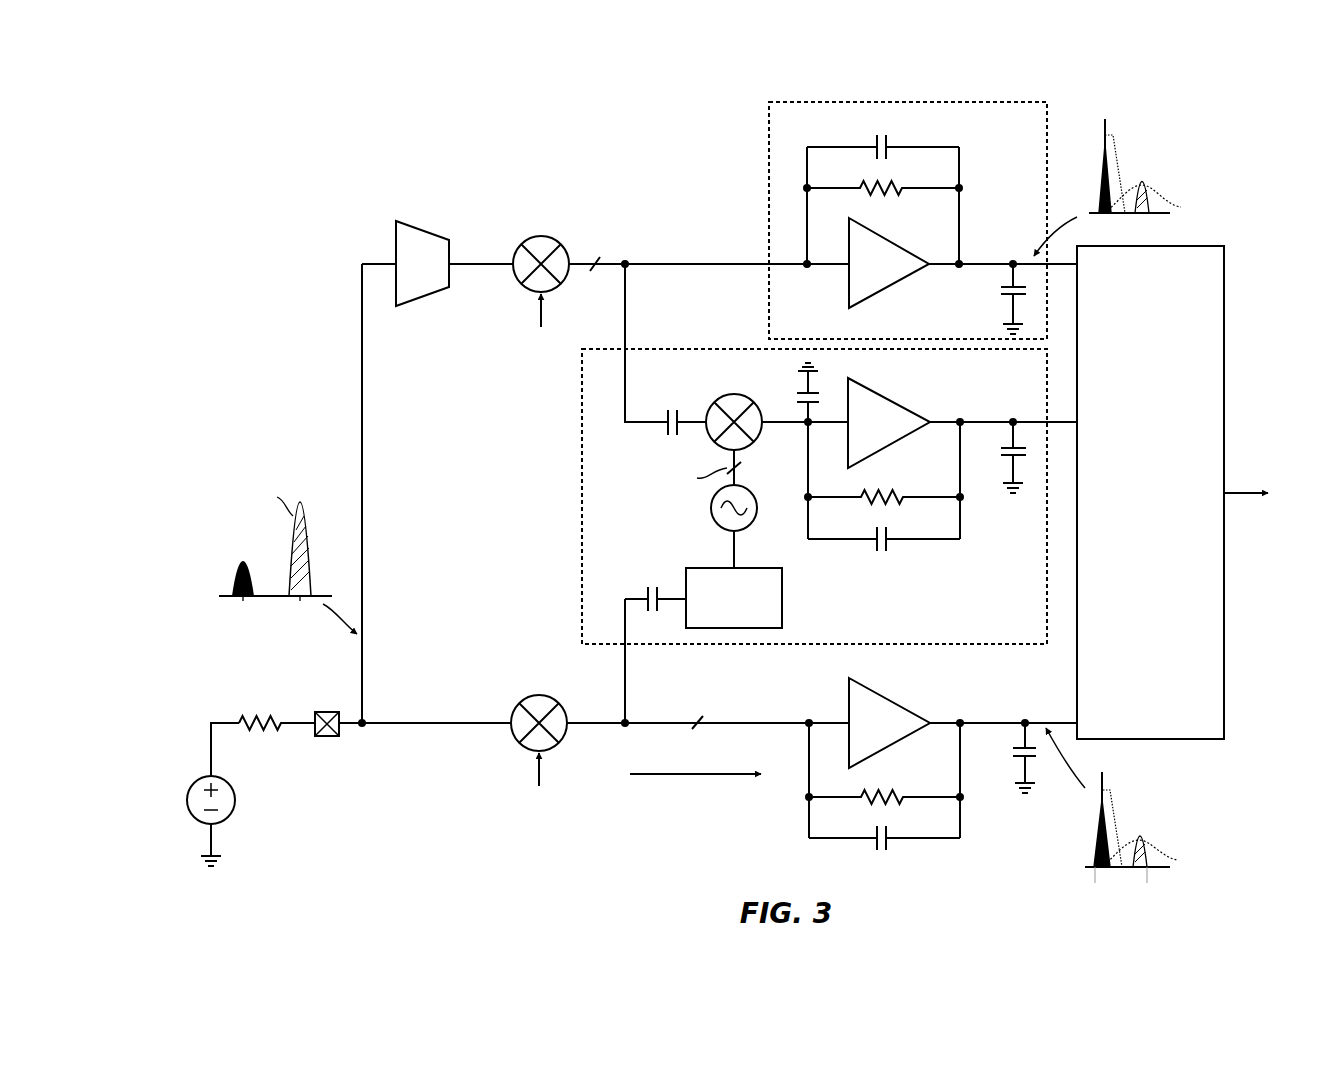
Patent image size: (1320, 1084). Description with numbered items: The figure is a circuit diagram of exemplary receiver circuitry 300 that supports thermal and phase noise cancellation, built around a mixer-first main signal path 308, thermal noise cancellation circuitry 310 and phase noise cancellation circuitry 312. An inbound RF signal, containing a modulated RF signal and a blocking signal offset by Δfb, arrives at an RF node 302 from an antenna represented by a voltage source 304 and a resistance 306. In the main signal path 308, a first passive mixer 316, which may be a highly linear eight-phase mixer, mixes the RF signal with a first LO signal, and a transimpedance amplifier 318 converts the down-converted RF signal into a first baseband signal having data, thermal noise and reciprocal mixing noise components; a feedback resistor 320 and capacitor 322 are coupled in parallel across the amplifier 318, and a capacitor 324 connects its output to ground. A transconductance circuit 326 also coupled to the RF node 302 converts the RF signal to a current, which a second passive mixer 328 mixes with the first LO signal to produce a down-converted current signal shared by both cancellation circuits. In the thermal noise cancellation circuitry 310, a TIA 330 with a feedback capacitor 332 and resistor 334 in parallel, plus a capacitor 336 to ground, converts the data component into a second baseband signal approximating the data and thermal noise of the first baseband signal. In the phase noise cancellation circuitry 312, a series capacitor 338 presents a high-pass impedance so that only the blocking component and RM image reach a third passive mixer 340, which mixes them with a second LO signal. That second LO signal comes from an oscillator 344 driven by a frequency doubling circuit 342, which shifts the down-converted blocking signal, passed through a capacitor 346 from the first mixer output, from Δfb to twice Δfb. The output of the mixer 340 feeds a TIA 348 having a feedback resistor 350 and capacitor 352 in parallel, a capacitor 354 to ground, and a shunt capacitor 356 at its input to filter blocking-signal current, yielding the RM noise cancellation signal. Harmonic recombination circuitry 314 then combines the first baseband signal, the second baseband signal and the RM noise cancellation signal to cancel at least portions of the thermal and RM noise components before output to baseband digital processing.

The receiver circuitry 300 is at (249, 162).
The RF node 302 is at (315, 712).
The voltage source 304 is at (191, 786).
The resistance 306 is at (262, 732).
The main signal path 308 is at (695, 802).
The thermal noise cancellation circuitry 310 is at (769, 198).
The phase noise cancellation circuitry 312 is at (582, 489).
The harmonic recombination circuitry 314 is at (1172, 492).
The first passive mixer 316 is at (520, 703).
The transimpedance amplifier 318 is at (863, 686).
The feedback resistor 320 is at (898, 802).
The feedback capacitor 322 is at (888, 848).
The capacitor 324 is at (1012, 752).
The transconductance circuit 326 is at (396, 228).
The second passive mixer 328 is at (522, 243).
The transimpedance amplifier 330 is at (849, 283).
The feedback capacitor 332 is at (888, 142).
The feedback resistor 334 is at (900, 182).
The capacitor 336 is at (1004, 292).
The series capacitor 338 is at (665, 432).
The third passive mixer 340 is at (716, 400).
The frequency doubling circuit 342 is at (782, 590).
The oscillator 344 is at (714, 520).
The capacitor 346 is at (645, 590).
The transimpedance amplifier 348 is at (880, 392).
The feedback resistor 350 is at (900, 500).
The feedback capacitor 352 is at (892, 548).
The capacitor 354 is at (1005, 456).
The shunt capacitor 356 is at (798, 396).